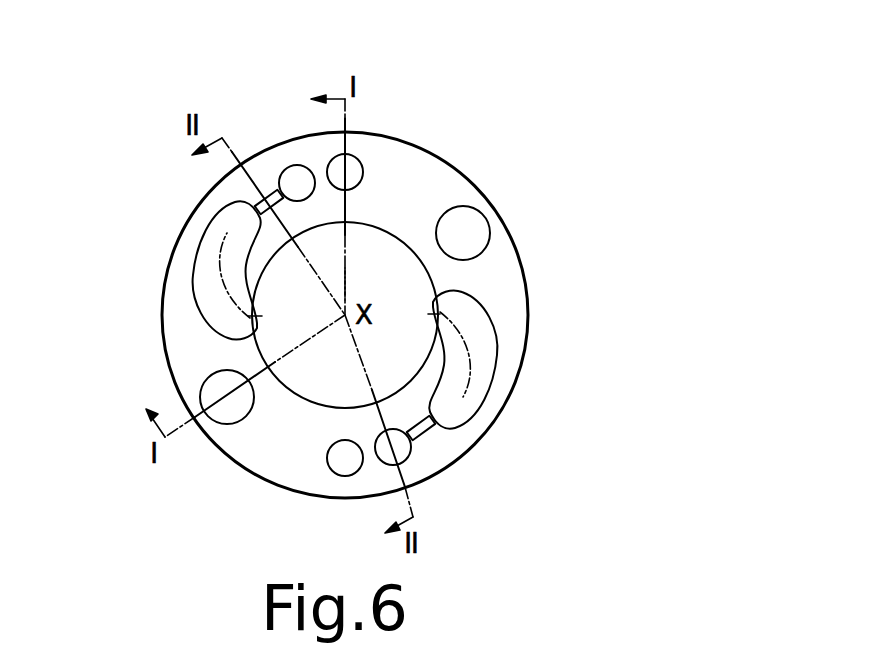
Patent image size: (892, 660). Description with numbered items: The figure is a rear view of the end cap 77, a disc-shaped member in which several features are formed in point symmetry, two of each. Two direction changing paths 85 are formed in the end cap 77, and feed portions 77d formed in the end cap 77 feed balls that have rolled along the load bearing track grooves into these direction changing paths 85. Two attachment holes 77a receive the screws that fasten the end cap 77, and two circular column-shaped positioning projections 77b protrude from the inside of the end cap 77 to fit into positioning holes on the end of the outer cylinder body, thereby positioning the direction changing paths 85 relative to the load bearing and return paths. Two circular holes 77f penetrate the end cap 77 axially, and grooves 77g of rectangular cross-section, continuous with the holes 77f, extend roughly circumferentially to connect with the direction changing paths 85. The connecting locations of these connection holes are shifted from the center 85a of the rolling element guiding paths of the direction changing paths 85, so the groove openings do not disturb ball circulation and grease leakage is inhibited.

The end cap 77 is at (458, 153).
The attachment hole 77a is at (480, 228).
The positioning projection 77b is at (353, 170).
The feed portion 77d is at (432, 312).
The hole 77f is at (293, 167).
The groove 77g is at (270, 196).
The direction changing path 85 is at (482, 385).
The center of the rolling element guiding path 85a is at (477, 351).